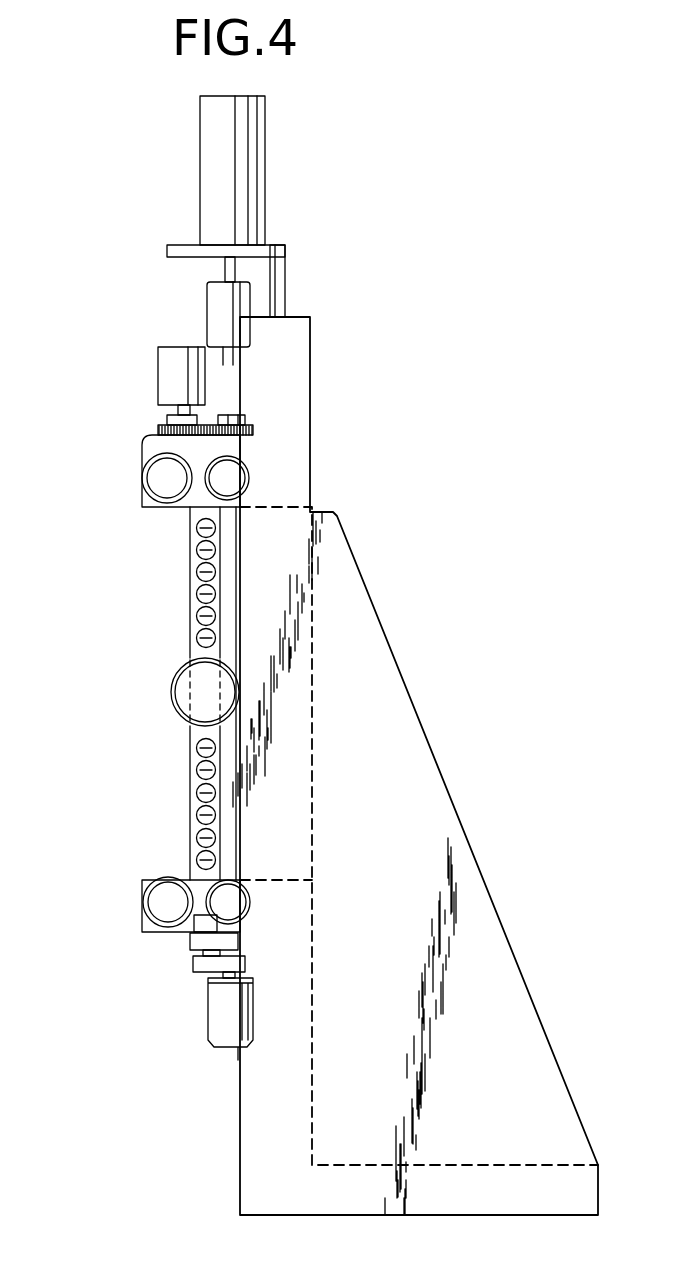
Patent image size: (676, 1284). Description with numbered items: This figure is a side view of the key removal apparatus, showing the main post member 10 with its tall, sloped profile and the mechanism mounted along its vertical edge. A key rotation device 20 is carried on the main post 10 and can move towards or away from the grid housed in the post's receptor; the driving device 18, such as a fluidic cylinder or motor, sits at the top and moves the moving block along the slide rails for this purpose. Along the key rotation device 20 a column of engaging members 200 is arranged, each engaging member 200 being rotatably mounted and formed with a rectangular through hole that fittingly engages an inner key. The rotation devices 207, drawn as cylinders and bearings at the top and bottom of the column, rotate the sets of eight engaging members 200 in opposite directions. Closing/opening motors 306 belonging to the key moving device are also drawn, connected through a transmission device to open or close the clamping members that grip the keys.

The main post member 10 is at (423, 822).
The driving device 18 is at (220, 173).
The key rotation device 20 is at (180, 749).
The engaging member 200 is at (217, 521).
The rotation device 207 is at (213, 312).
The closing/opening motor 306 is at (173, 372).